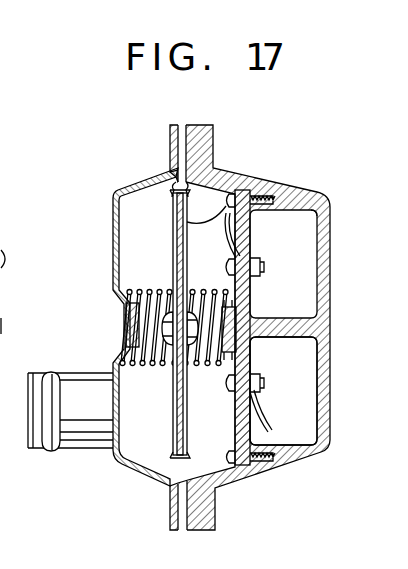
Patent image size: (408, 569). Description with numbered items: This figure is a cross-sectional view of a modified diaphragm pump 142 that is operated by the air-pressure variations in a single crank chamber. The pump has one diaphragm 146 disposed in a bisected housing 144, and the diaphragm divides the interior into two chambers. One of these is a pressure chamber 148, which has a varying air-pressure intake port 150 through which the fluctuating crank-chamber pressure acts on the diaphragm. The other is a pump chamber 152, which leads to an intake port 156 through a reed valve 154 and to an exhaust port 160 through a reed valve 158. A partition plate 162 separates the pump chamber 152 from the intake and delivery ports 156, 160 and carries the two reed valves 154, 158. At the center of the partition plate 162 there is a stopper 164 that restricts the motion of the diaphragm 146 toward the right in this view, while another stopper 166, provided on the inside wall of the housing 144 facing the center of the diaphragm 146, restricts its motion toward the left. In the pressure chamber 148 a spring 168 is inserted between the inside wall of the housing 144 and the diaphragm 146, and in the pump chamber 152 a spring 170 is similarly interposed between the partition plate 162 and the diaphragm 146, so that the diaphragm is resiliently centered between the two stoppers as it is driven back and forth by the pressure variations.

The diaphragm pump 142 is at (265, 181).
The bisected housing 144 is at (142, 184).
The diaphragm 146 is at (171, 178).
The pressure chamber 148 is at (167, 434).
The varying air-pressure intake port 150 is at (50, 448).
The pump chamber 152 is at (233, 434).
The reed valve 154 is at (187, 214).
The intake port 156 is at (313, 213).
The reed valve 158 is at (258, 424).
The exhaust port 160 is at (312, 431).
The partition plate 162 is at (249, 238).
The stopper 164 is at (242, 315).
The stopper 166 is at (130, 316).
The spring 168 is at (120, 368).
The spring 170 is at (200, 290).